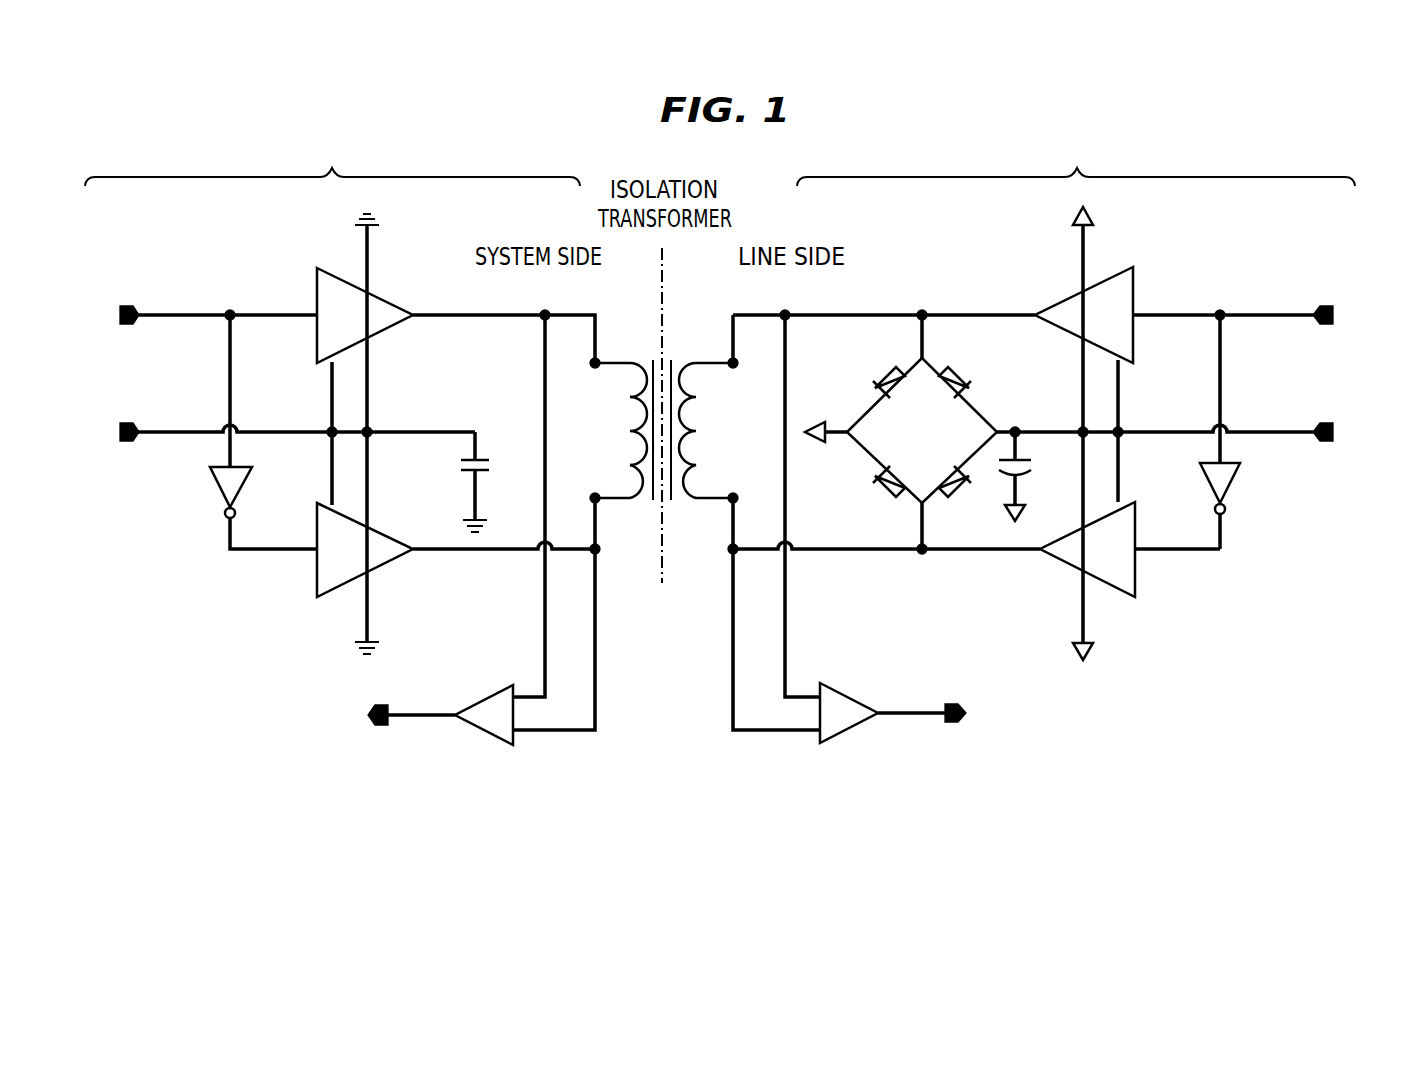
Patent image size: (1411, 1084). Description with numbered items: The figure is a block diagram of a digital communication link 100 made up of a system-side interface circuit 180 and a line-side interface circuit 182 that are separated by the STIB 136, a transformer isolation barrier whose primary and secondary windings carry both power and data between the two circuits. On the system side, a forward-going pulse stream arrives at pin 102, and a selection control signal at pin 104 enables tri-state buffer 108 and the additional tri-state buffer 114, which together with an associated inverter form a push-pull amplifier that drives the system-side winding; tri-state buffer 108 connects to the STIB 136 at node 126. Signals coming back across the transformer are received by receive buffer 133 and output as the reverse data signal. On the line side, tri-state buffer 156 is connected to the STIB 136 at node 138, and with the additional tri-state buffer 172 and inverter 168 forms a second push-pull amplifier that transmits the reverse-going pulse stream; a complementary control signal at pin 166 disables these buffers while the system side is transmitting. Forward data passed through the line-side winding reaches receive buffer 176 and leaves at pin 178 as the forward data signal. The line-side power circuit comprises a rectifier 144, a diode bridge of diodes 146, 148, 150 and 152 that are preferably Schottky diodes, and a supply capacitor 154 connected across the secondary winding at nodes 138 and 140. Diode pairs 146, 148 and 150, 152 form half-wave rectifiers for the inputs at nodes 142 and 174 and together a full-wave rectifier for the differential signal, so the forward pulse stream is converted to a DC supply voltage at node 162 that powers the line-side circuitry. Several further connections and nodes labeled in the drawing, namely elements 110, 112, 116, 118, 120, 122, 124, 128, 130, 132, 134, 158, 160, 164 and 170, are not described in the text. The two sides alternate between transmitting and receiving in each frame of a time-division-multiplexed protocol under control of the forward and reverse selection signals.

The digital communication link 100 is at (246, 753).
The pin 102 is at (136, 312).
The pin 104 is at (136, 429).
The tri-state buffer 108 is at (317, 282).
The enable line of first driver 110 is at (331, 400).
The enable line of second driver 112 is at (331, 487).
The tri-state buffer 114 is at (317, 577).
The supply/ground line 116 is at (368, 380).
The system side supply capacitor 118 is at (460, 464).
The ground line 120 is at (368, 507).
The driver output line 122 is at (482, 314).
The node 124 is at (548, 313).
The node 126 is at (578, 392).
The primary winding lower connection 128 is at (578, 468).
The receiver input line 130 is at (544, 641).
The RxR output terminal 132 is at (388, 710).
The receive buffer 133 is at (498, 740).
The receiver inverting input line 134 is at (566, 731).
The STIB 136 is at (616, 440).
The node 138 is at (787, 405).
The node 140 is at (787, 463).
The node 142 is at (925, 313).
The rectifier 144 is at (917, 432).
The diode 146 is at (885, 385).
The diode 148 is at (960, 385).
The diode 150 is at (876, 472).
The diode 152 is at (960, 488).
The supply capacitor 154 is at (1035, 473).
The tri-state buffer 156 is at (1133, 282).
The node 158 is at (1223, 313).
The TxR terminal 160 is at (1316, 319).
The node 162 is at (1086, 430).
The enable line 164 is at (1122, 440).
The pin 166 is at (1316, 430).
The inverter 168 is at (1238, 482).
The inverted select line 170 is at (1210, 552).
The tri-state buffer 172 is at (1137, 585).
The node 174 is at (928, 552).
The receive buffer 176 is at (852, 697).
The pin 178 is at (946, 720).
The system-side interface circuit 180 is at (332, 158).
The line-side interface circuit 182 is at (1076, 158).